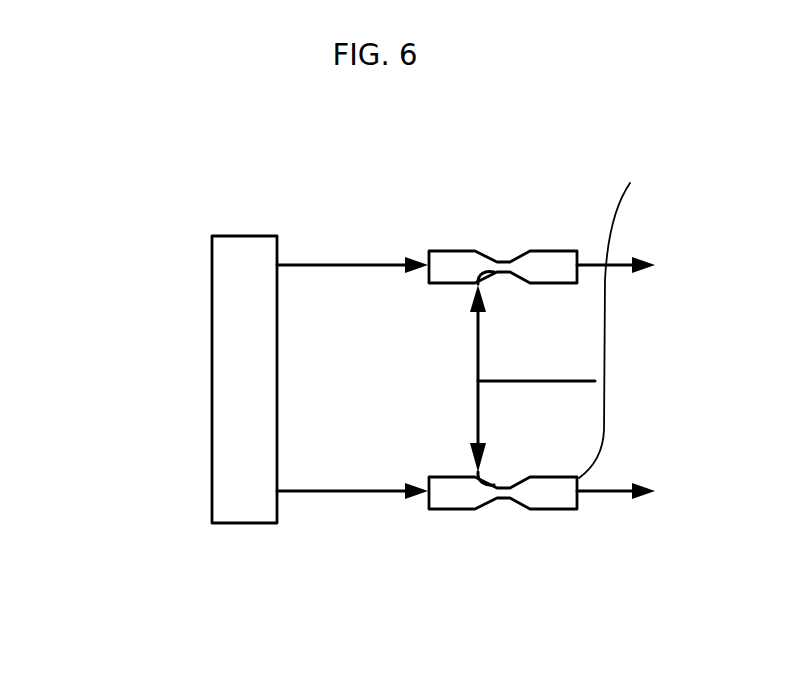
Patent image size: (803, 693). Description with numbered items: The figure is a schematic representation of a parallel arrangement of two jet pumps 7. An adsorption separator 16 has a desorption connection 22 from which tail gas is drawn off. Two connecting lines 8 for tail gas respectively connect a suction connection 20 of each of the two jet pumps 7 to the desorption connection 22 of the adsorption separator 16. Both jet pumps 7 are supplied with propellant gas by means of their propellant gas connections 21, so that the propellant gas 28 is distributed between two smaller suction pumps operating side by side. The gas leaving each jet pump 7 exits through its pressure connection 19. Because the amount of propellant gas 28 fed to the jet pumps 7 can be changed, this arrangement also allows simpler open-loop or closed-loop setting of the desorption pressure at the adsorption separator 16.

The jet pump 7 is at (511, 237).
The connecting line 8 is at (372, 266).
The adsorption separator 16 is at (186, 392).
The pressure connection 19 is at (578, 265).
The suction connection 20 is at (428, 266).
The propellant gas connection 21 is at (480, 473).
The desorption connection 22 is at (277, 266).
The propellant gas 28 is at (595, 381).